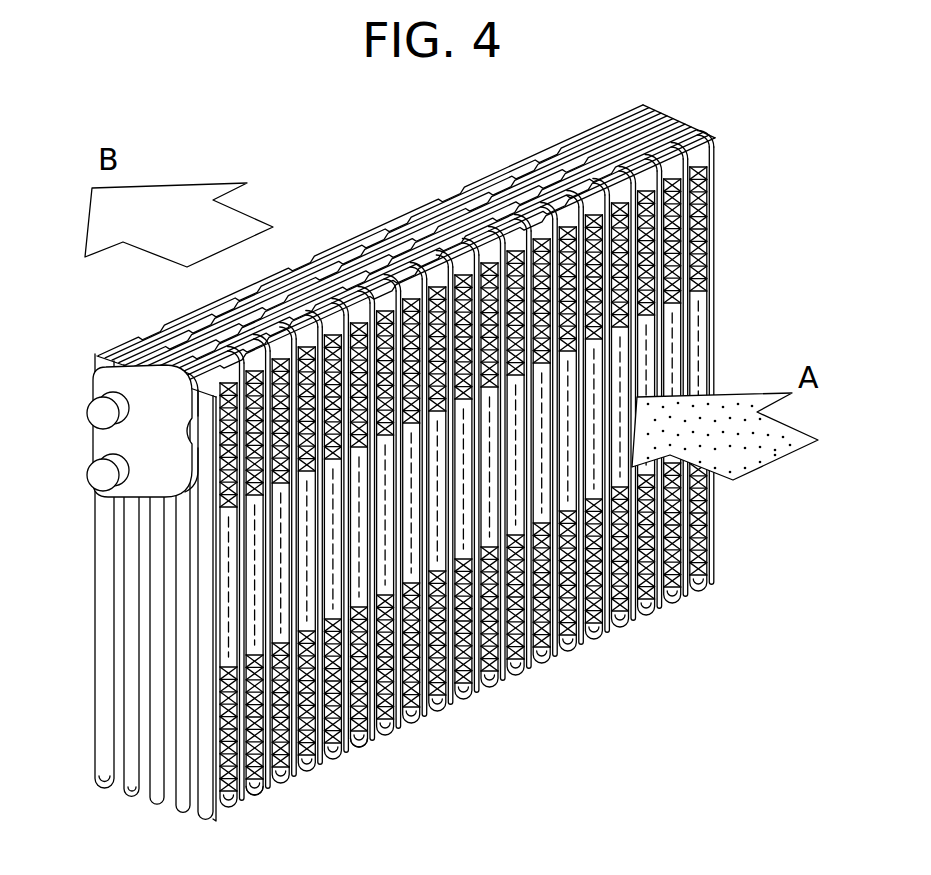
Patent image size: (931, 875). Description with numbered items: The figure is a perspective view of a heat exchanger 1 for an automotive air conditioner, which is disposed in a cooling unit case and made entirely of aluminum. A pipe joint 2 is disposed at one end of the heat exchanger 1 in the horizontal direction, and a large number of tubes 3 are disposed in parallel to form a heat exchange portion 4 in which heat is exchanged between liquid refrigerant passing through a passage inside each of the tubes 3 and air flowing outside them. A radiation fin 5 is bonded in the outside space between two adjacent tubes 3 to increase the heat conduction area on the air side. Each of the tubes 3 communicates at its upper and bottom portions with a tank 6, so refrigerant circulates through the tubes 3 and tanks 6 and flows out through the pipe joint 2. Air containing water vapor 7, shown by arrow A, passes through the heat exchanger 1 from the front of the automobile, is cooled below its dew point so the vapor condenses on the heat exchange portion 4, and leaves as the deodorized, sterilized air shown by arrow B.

The heat exchanger 1 is at (731, 213).
The pipe joint 2 is at (88, 446).
The tubes 3 is at (293, 550).
The heat exchange portion 4 is at (256, 614).
The radiation fin 5 is at (256, 745).
The tank 6 is at (470, 171).
The air containing water vapor 7 is at (748, 455).